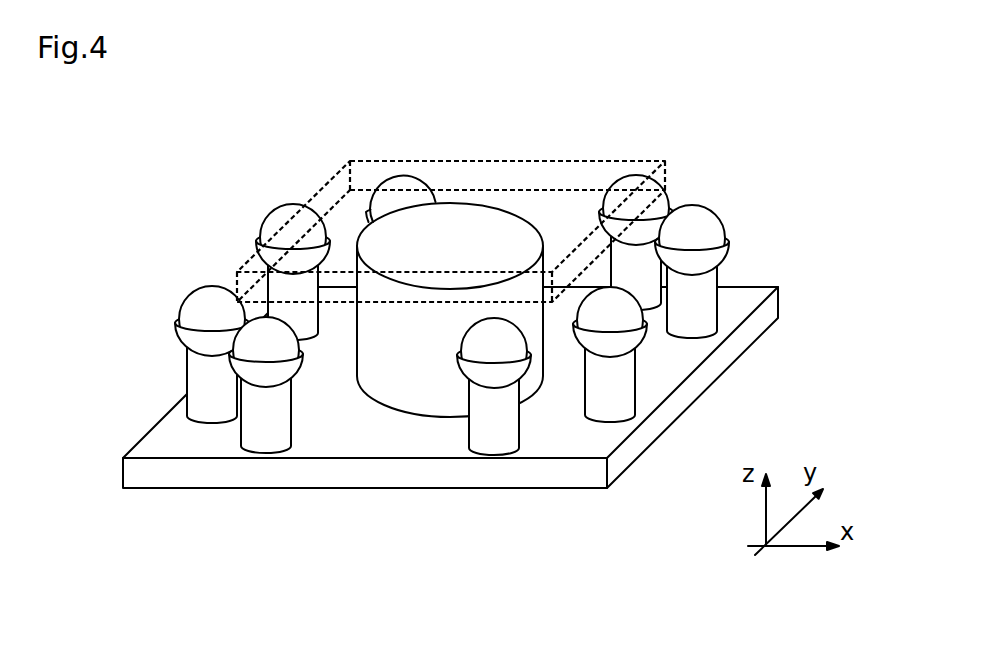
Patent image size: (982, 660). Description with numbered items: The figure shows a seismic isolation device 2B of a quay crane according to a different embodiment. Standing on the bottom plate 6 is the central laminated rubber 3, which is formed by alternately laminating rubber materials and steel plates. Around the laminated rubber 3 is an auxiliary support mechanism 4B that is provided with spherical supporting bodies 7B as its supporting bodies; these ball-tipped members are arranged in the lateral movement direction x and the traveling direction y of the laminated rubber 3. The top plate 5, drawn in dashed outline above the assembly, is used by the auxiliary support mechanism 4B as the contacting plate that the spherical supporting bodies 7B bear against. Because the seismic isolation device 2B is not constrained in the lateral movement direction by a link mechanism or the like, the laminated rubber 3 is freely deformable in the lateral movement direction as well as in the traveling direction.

The seismic isolation device 2B is at (134, 162).
The laminated rubber 3 is at (458, 252).
The auxiliary support mechanism 4B is at (152, 244).
The top plate 5 is at (373, 162).
The bottom plate 6 is at (152, 442).
The spherical supporting bodies 7B is at (207, 293).